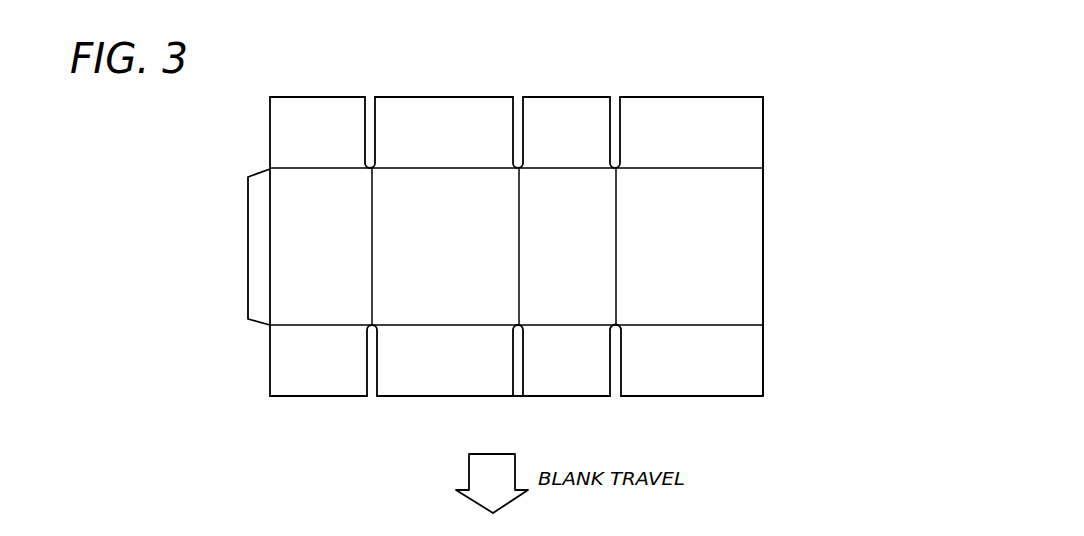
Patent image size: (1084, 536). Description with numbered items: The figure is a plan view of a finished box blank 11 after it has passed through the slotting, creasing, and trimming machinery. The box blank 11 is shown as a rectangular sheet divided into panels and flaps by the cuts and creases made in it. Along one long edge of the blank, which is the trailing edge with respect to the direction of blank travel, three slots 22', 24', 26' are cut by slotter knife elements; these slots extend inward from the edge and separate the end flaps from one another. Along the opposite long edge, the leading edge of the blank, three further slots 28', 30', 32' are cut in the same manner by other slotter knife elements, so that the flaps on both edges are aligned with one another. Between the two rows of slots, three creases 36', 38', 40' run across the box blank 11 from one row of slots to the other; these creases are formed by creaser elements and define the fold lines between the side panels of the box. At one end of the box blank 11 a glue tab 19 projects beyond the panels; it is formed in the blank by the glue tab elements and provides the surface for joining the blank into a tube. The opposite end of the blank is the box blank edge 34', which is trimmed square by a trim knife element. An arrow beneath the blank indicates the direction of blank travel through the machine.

The box blank 11 is at (221, 374).
The glue tab 19 is at (256, 224).
The slot 22' is at (397, 113).
The slot 24' is at (549, 113).
The slot 26' is at (651, 114).
The slot 28' is at (356, 387).
The slot 30' is at (490, 381).
The slot 32' is at (599, 381).
The box blank edge 34' is at (793, 246).
The crease 36' is at (402, 246).
The crease 38' is at (545, 246).
The crease 40' is at (646, 246).